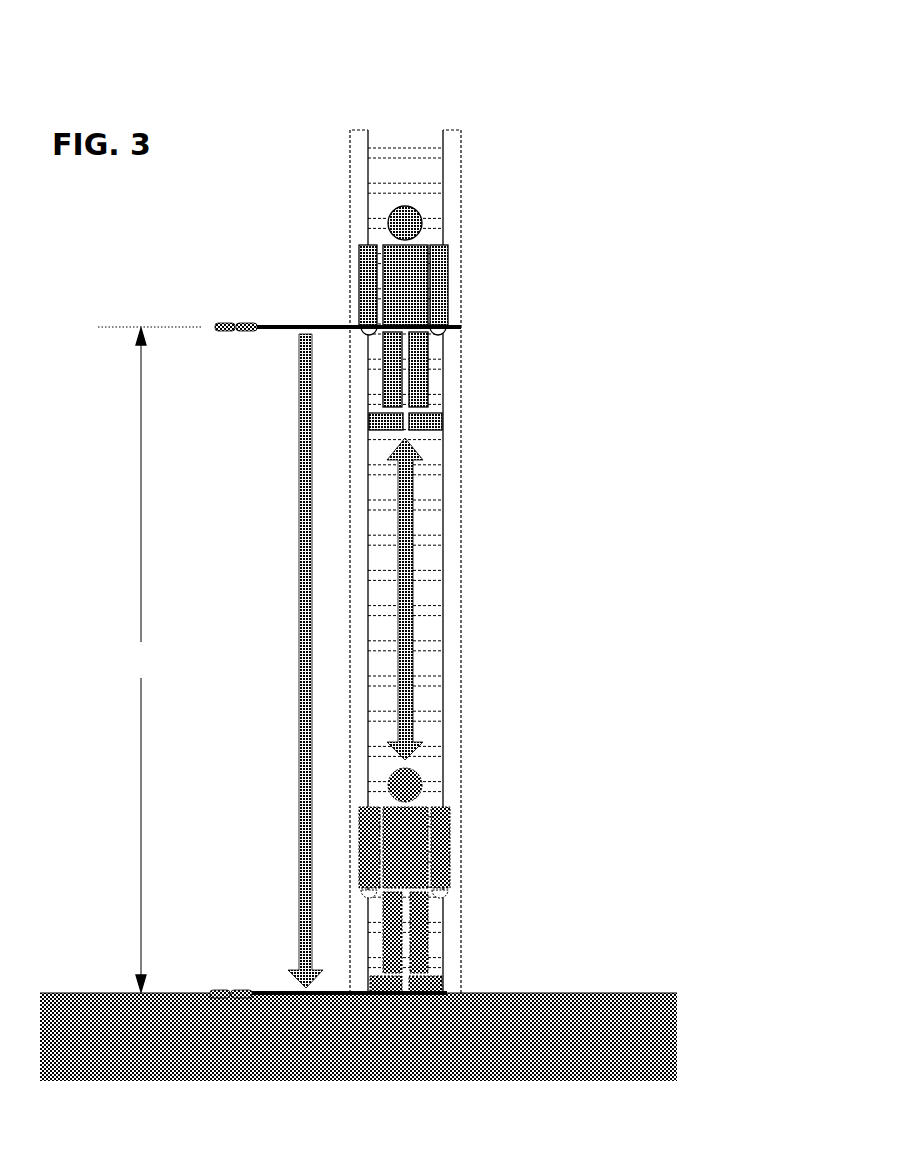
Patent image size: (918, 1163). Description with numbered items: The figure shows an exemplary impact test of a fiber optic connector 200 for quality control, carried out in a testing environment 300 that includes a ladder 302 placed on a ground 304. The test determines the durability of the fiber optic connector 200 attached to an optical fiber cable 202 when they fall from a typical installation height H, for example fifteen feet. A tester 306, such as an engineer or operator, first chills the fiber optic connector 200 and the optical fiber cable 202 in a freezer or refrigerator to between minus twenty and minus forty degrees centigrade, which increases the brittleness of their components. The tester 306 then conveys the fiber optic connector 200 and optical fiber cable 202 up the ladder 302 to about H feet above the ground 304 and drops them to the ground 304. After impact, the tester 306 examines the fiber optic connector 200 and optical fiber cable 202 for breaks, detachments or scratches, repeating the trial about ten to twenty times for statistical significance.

The testing environment 300 is at (323, 62).
The ladder 302 is at (455, 152).
The ground 304 is at (605, 998).
The tester 306 is at (447, 258).
The fiber optic connector 200 is at (250, 322).
The optical fiber cable 202 is at (303, 334).